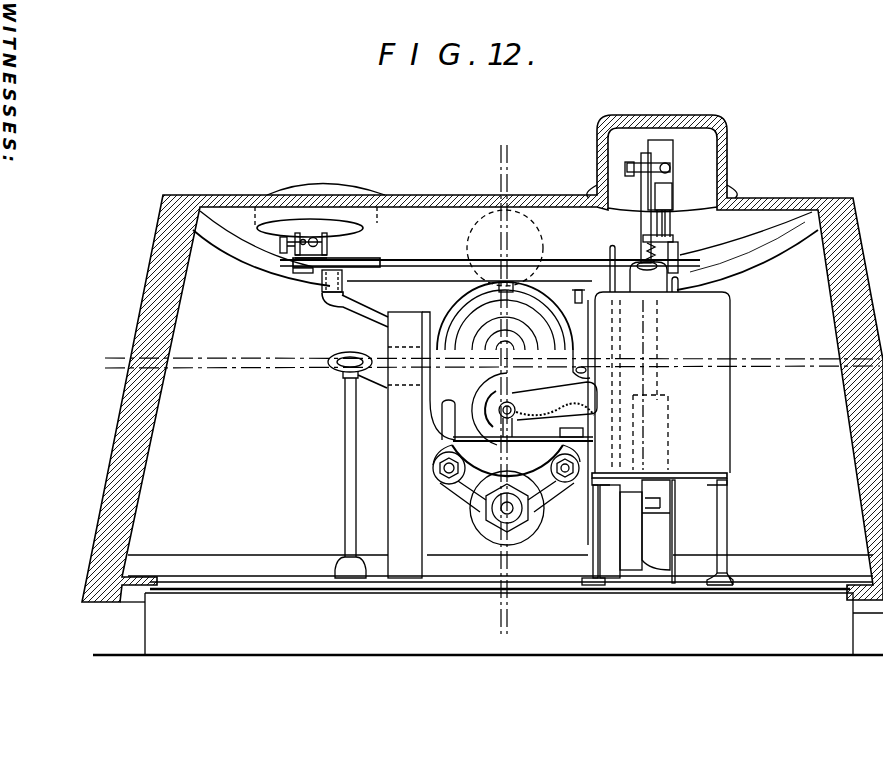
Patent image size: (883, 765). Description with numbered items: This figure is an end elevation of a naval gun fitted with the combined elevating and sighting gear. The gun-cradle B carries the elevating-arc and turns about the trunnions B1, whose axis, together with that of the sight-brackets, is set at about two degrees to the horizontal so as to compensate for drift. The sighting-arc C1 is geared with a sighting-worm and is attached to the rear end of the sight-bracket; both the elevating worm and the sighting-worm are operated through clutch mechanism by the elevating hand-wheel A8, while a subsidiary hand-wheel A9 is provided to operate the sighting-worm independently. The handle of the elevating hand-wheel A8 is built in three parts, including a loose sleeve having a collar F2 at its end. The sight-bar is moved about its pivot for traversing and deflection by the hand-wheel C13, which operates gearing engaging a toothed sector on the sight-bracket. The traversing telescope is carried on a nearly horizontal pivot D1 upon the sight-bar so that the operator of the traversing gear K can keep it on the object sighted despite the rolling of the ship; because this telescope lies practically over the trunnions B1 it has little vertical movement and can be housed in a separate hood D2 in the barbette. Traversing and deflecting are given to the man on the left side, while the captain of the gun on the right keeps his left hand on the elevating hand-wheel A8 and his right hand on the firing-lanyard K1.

The hood D2 is at (320, 201).
The hand-wheel C13 is at (279, 244).
The pivot D1 is at (338, 243).
The trunnions B1 is at (400, 350).
The traversing gear K is at (325, 353).
The gun-cradle B is at (560, 448).
The firing-lanyard K1 is at (578, 416).
The collar F2 is at (569, 291).
The elevating hand-wheel A8 is at (608, 258).
The subsidiary hand-wheel A9 is at (677, 281).
The sighting-arc C1 is at (650, 318).